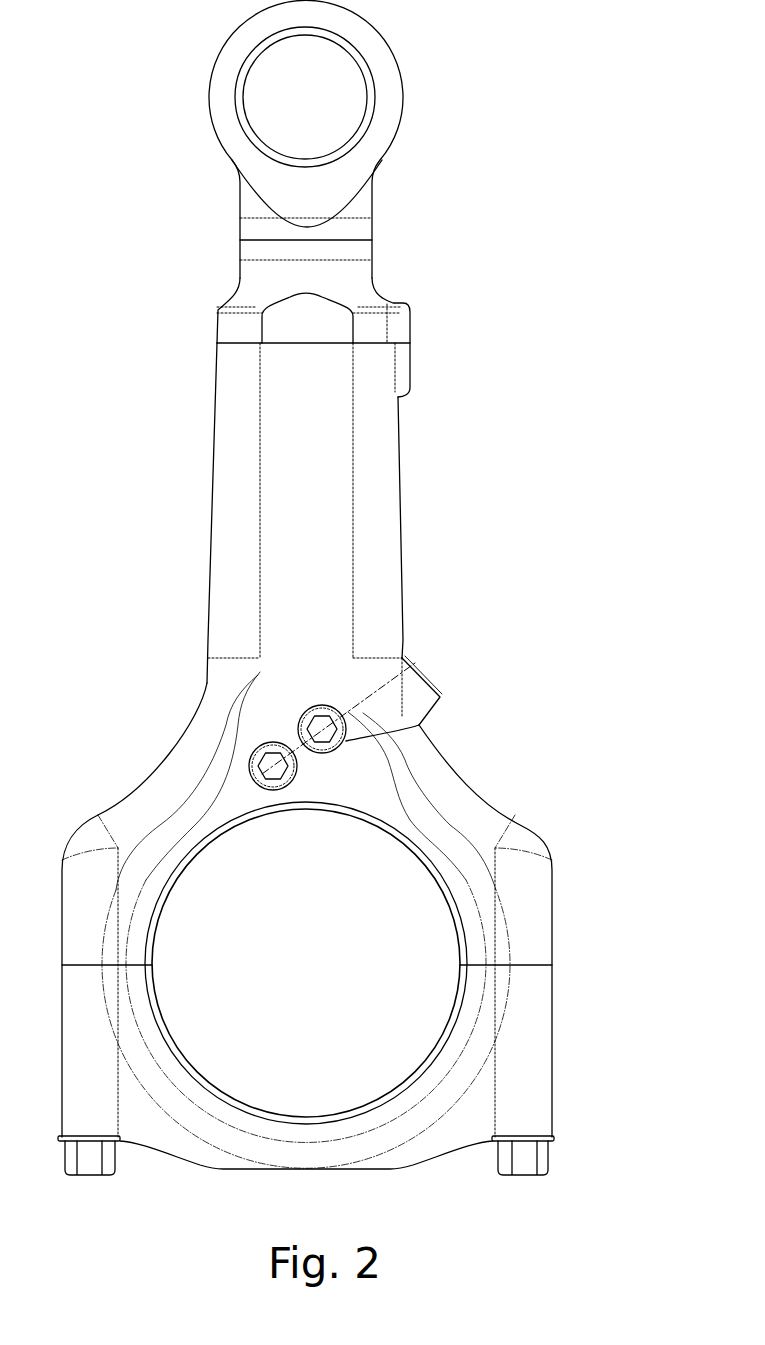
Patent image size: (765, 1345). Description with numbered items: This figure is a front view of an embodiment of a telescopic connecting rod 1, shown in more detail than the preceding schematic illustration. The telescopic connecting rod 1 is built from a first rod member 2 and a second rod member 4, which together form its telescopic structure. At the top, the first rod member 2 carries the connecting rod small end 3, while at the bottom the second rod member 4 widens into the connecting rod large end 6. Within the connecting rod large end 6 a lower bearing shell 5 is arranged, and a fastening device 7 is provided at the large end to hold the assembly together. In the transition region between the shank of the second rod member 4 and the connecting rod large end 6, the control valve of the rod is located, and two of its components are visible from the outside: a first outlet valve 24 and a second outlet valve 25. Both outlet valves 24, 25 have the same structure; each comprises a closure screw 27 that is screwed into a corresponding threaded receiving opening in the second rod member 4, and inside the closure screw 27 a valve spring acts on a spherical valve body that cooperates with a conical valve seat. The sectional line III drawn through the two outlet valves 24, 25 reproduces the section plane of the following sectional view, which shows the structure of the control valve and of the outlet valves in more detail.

The telescopic connecting rod 1 is at (562, 570).
The first rod member 2 is at (367, 287).
The connecting rod small end 3 is at (390, 85).
The second rod member 4 is at (390, 464).
The lower bearing shell 5 is at (490, 1017).
The connecting rod large end 6 is at (395, 1133).
The fastening device 7 is at (540, 1162).
The first outlet valve 24 is at (248, 748).
The second outlet valve 25 is at (292, 716).
The closure screw 27 is at (250, 764).
The sectional line III is at (423, 656).